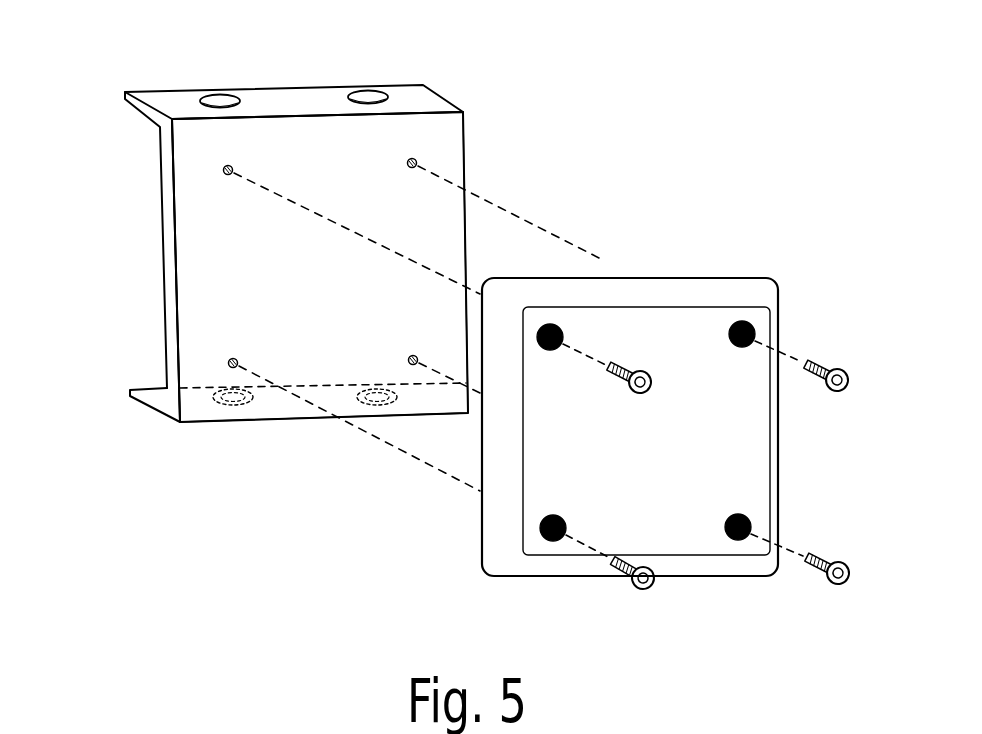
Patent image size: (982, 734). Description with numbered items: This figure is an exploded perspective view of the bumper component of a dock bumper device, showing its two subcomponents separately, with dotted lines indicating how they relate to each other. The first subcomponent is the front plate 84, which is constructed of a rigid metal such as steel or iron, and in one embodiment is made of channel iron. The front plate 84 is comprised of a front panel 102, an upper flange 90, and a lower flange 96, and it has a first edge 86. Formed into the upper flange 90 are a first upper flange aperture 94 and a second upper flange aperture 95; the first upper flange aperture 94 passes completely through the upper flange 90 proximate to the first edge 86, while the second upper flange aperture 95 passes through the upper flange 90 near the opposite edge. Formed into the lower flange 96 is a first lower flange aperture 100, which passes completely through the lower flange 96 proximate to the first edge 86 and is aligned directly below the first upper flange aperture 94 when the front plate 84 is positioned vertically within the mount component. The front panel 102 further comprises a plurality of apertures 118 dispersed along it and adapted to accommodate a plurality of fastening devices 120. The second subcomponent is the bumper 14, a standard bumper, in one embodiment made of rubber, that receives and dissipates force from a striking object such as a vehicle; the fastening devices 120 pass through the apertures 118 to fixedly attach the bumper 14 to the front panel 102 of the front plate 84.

The bumper 14 is at (608, 322).
The front plate 84 is at (438, 150).
The first edge 86 is at (170, 248).
The upper flange 90 is at (428, 105).
The first upper flange aperture 94 is at (222, 100).
The second upper flange aperture 95 is at (367, 97).
The lower flange 96 is at (293, 402).
The first lower flange aperture 100 is at (230, 402).
The front panel 102 is at (267, 278).
The apertures 118 is at (230, 170).
The fastening devices 120 is at (633, 582).